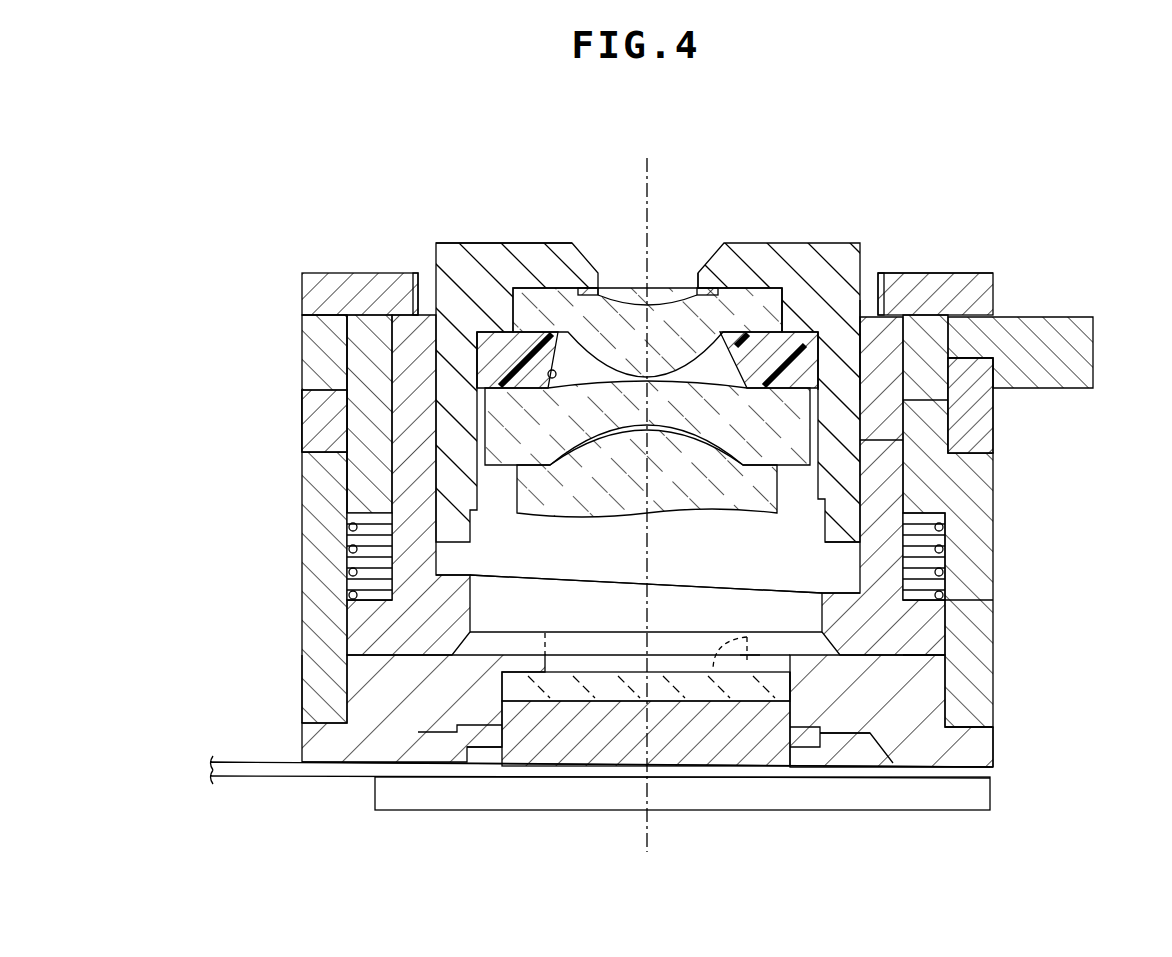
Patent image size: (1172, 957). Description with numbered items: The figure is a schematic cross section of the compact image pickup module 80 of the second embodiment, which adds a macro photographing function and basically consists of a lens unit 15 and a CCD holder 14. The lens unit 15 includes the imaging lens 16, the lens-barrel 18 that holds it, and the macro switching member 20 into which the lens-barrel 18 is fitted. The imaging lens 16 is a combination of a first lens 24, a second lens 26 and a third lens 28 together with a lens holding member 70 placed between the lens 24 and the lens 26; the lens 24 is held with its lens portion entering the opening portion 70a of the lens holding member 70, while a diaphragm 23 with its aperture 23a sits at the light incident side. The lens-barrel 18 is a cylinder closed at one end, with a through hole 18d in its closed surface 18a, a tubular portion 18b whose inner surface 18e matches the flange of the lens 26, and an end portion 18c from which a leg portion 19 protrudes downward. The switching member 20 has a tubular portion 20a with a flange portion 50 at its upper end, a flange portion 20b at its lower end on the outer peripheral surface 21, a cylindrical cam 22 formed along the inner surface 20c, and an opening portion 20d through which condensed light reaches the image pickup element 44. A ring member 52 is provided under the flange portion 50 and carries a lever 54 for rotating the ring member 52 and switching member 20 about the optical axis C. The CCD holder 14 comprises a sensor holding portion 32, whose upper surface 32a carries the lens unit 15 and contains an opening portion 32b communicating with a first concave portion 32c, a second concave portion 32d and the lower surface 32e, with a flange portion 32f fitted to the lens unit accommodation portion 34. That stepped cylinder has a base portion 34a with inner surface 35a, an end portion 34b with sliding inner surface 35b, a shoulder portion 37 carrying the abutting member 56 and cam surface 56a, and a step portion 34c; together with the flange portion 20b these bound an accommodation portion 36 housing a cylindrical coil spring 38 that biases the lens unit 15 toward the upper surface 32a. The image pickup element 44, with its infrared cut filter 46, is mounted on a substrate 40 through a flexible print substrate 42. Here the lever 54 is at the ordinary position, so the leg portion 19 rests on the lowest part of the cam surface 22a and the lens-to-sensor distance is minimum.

The CCD holder 14 is at (1022, 752).
The lens unit 15 is at (548, 178).
The imaging lens 16 is at (497, 335).
The lens-barrel 18 is at (788, 198).
The closed surface 18a is at (780, 300).
The tubular portion 18b is at (856, 390).
The end portion 18c is at (858, 560).
The through hole 18d is at (698, 274).
The inner surface 18e is at (806, 355).
The leg portion 19 is at (845, 595).
The macro switching member 20 is at (880, 263).
The tubular portion 20a is at (892, 423).
The flange portion 20b is at (857, 590).
The inner surface 20c is at (857, 457).
The opening portion 20d is at (740, 700).
The outer peripheral surface 21 is at (373, 335).
The cylindrical cam 22 is at (680, 584).
The cam surface 22a is at (900, 605).
The diaphragm 23 is at (577, 292).
The aperture opening 23a is at (600, 294).
The lens 24 is at (537, 293).
The lens 26 is at (505, 420).
The lens 28 is at (530, 492).
The sensor holding portion 32 is at (332, 763).
The upper surface 32a is at (918, 656).
The opening portion 32b is at (750, 660).
The first concave portion 32c is at (792, 690).
The second concave portion 32d is at (867, 753).
The lower surface 32e is at (953, 765).
The flange portion 32f is at (978, 752).
The lens unit accommodation portion 34 is at (292, 712).
The base portion 34a is at (318, 683).
The end portion 34b is at (360, 337).
The step portion 34c is at (352, 462).
The inner surface 35a is at (347, 582).
The inner surface 35b is at (398, 322).
The accommodation portion 36 is at (357, 563).
The shoulder portion 37 is at (318, 450).
The cylindrical coil spring 38 is at (347, 602).
The substrate 40 is at (612, 800).
The flexible print substrate 42 is at (290, 772).
The image pickup element 44 is at (556, 757).
The infrared cut filter 46 is at (517, 688).
The flange portion 50 is at (303, 282).
The ring member 52 is at (310, 324).
The lever 54 is at (1094, 352).
The abutting member 56 is at (988, 398).
The cam surface 56a is at (970, 358).
The lens holding member 70 is at (500, 358).
The opening portion 70a is at (550, 375).
The image pickup module 80 is at (908, 155).
The optical axis C is at (650, 164).